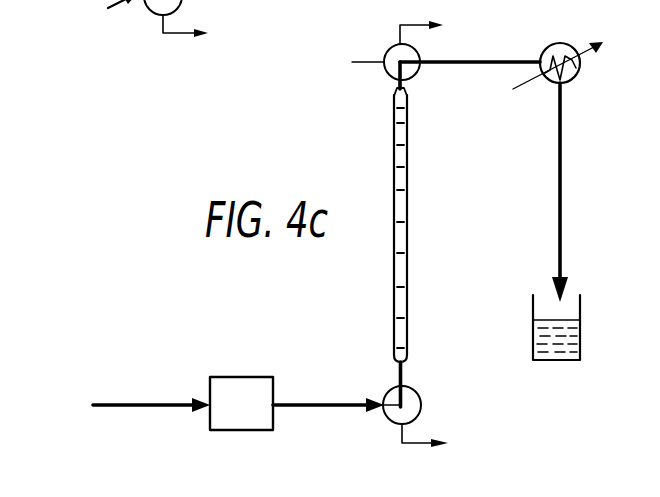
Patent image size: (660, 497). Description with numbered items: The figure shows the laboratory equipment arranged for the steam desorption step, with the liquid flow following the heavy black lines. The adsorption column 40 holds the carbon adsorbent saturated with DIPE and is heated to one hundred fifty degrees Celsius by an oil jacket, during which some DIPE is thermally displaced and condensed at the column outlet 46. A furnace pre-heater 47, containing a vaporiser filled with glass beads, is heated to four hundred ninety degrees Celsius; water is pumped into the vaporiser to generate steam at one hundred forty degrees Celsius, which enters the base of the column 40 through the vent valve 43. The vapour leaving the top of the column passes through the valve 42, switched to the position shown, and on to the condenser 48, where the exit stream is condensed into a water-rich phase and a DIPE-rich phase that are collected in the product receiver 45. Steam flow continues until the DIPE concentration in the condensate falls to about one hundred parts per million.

The adsorption column 40 is at (410, 118).
The valve 42 is at (422, 45).
The vent valve 43 is at (144, 12).
The product receiver 45 is at (580, 331).
The column outlet 46 is at (394, 92).
The furnace pre-heater 47 is at (252, 384).
The condenser 48 is at (578, 70).